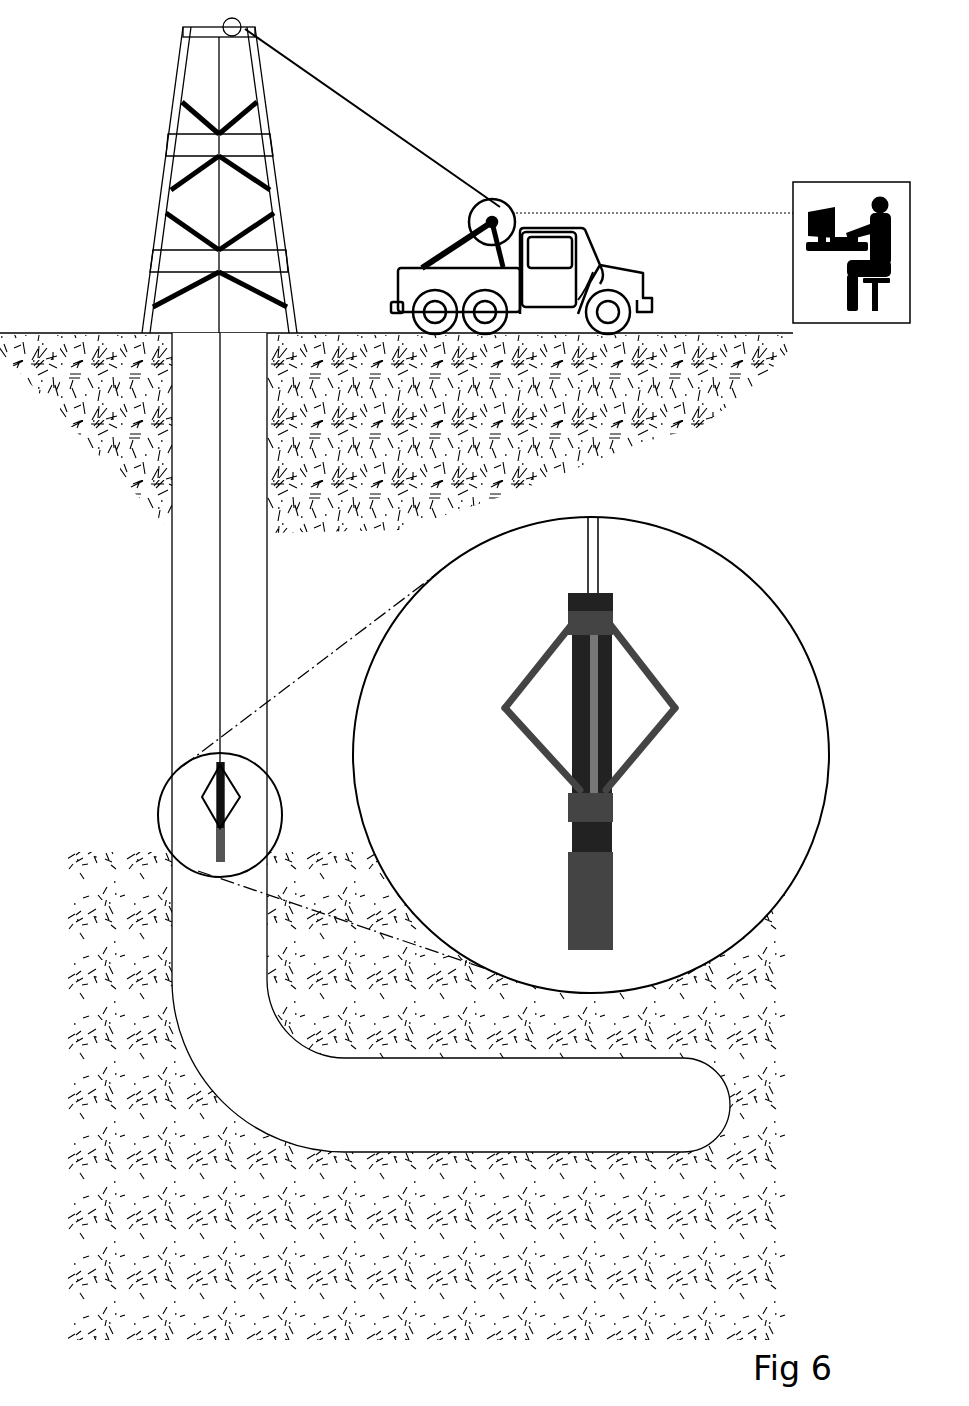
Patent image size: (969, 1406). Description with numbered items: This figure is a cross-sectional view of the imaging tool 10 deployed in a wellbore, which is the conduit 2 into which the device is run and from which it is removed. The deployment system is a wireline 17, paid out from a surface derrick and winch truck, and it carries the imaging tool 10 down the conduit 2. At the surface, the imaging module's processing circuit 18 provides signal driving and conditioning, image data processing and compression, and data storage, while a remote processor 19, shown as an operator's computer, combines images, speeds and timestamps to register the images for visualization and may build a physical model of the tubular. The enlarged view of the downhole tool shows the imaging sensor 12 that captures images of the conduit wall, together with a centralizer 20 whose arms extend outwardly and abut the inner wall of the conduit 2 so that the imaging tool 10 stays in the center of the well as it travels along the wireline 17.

The conduit 2 is at (232, 941).
The imaging tool 10 is at (172, 790).
The imaging sensor 12 is at (613, 898).
The wireline 17 is at (390, 128).
The processing circuit 18 is at (170, 127).
The remote processor 19 is at (851, 211).
The centralizer 20 is at (627, 778).